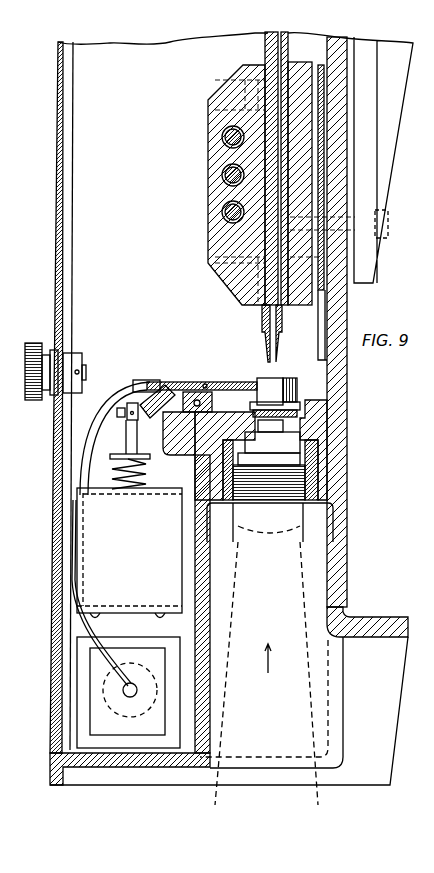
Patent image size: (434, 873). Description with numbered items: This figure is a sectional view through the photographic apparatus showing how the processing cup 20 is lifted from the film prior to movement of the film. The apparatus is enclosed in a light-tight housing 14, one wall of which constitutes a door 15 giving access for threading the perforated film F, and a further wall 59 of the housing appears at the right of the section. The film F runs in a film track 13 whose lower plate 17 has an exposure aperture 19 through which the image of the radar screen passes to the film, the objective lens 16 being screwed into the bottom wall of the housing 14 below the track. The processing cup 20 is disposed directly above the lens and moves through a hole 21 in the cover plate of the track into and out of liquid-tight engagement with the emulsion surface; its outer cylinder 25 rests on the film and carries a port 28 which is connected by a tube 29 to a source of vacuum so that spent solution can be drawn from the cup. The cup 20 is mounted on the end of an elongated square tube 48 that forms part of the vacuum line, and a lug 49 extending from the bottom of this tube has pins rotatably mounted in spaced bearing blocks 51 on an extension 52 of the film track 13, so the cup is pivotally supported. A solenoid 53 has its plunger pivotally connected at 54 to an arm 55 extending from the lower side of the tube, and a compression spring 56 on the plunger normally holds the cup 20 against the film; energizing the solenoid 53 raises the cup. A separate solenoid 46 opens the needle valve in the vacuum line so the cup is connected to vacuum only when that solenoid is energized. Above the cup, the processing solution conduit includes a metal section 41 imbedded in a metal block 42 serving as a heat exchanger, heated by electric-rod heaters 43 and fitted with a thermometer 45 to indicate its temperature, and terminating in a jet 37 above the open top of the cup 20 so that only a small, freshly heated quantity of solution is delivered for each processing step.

The film track 13 is at (308, 416).
The light-tight housing 14 is at (235, 391).
The door 15 is at (58, 228).
The objective lens 16 is at (270, 618).
The lower plate 17 is at (273, 433).
The exposure aperture 19 is at (296, 457).
The processing cup 20 is at (253, 381).
The hole 21 is at (299, 404).
The outer cylinder 25 is at (293, 379).
The port 28 is at (258, 377).
The tube 29 is at (115, 387).
The jet 37 is at (280, 348).
The metal section 41 is at (275, 53).
The metal block 42 is at (215, 237).
The electric-rod heater 43 is at (222, 136).
The thermometer 45 is at (222, 176).
The solenoid 46 is at (80, 683).
The elongated square tube 48 is at (206, 380).
The lug 49 is at (188, 391).
The bearing block 51 is at (173, 398).
The extension 52 is at (185, 416).
The solenoid 53 is at (129, 553).
The pivotal connection 54 is at (126, 422).
The arm 55 is at (145, 420).
The compression spring 56 is at (114, 472).
The wall 59 is at (344, 315).
The perforated film F is at (300, 421).